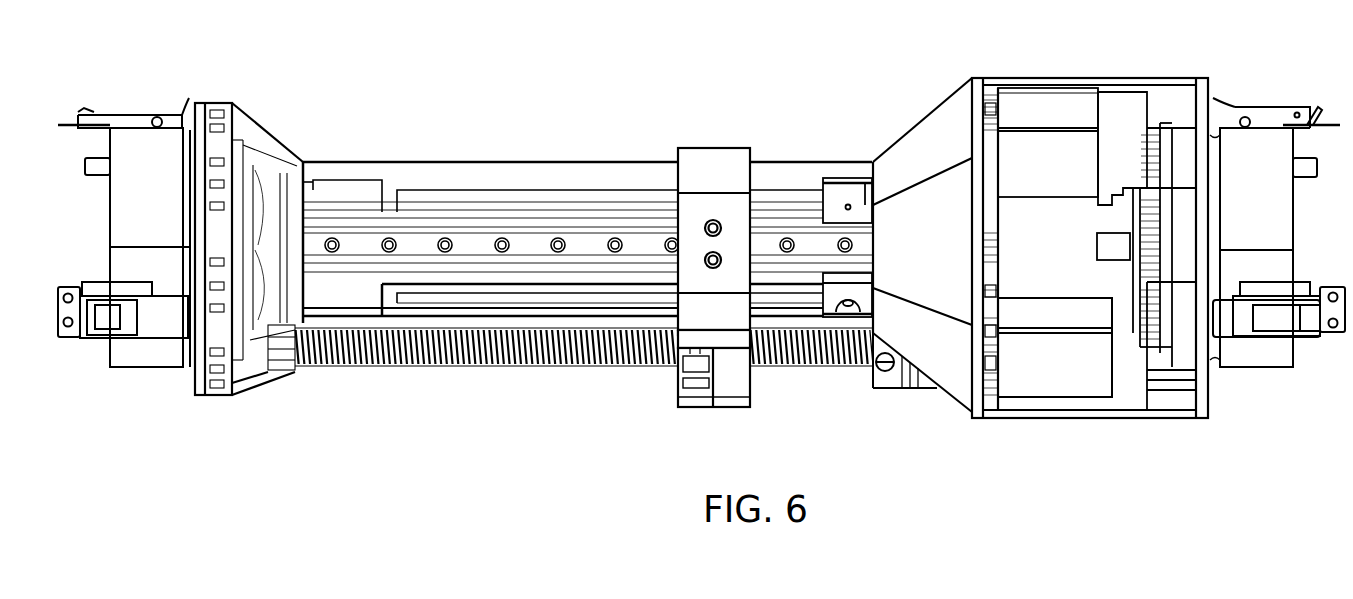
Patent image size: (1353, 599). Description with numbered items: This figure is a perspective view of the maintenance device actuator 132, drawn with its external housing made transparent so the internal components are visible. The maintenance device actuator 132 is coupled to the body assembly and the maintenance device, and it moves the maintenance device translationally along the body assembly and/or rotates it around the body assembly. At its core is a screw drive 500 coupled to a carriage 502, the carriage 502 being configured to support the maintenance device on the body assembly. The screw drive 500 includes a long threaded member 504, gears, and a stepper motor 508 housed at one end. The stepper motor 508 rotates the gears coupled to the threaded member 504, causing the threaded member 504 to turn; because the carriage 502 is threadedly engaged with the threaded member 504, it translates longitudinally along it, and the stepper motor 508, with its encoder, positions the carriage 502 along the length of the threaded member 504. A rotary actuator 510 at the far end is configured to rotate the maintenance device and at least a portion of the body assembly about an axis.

The maintenance device actuator 132 is at (1040, 237).
The screw drive 500 is at (812, 380).
The carriage 502 is at (710, 160).
The threaded member 504 is at (475, 370).
The stepper motor 508 is at (1051, 382).
The rotary actuator 510 is at (1224, 390).